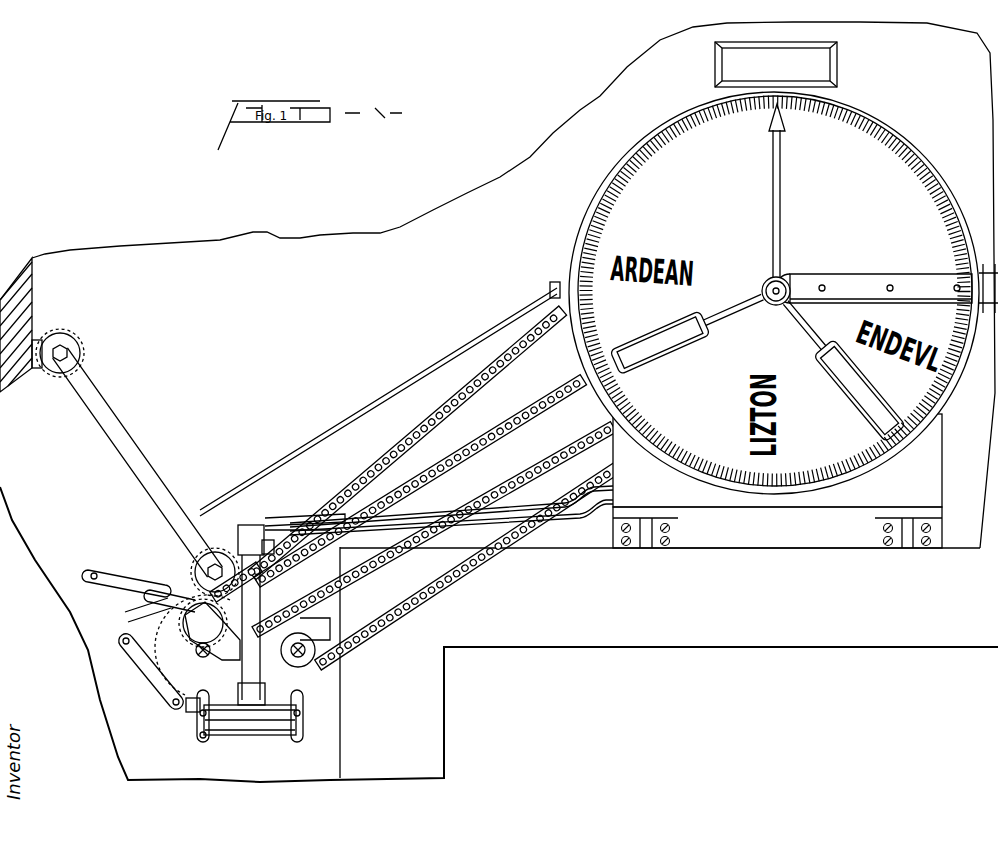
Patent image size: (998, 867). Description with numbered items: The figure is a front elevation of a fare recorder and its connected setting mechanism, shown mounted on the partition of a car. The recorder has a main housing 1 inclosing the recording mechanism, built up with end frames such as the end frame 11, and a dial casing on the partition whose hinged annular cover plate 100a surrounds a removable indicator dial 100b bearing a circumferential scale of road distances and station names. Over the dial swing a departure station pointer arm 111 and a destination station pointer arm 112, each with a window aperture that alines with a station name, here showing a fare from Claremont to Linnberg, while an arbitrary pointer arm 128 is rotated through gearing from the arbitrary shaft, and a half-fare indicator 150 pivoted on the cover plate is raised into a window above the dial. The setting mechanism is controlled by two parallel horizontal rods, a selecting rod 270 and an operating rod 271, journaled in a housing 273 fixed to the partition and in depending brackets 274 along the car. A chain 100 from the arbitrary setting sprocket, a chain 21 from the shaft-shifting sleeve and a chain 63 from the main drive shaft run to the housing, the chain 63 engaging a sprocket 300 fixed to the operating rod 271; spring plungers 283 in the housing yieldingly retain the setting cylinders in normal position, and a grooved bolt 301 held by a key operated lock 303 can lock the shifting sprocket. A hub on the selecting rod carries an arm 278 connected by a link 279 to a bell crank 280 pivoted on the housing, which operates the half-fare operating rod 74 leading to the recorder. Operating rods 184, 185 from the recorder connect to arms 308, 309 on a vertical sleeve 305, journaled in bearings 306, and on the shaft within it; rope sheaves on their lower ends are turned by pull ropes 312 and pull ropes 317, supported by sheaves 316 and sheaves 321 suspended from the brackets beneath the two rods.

The main housing 1 is at (943, 482).
The end frame 11 is at (856, 503).
The chain 21 is at (428, 483).
The chain 63 is at (428, 549).
The half-fare operating rod 74 is at (328, 432).
The chain 100 is at (384, 470).
The hinged annular cover plate 100a is at (898, 141).
The indicator dial 100b is at (918, 164).
The departure station pointer arm 111 is at (815, 347).
The destination station pointer arm 112 is at (714, 325).
The arbitrary pointer arm 128 is at (781, 199).
The half-fare indicator 150 is at (843, 62).
The operating rod 184 is at (566, 500).
The operating rod 185 is at (545, 510).
The selecting rod 270 is at (196, 646).
The operating rod 271 is at (318, 638).
The housing 273 is at (193, 604).
The depending bracket 274 is at (167, 498).
The arm 278 is at (188, 704).
The link 279 is at (146, 676).
The bell crank 280 is at (120, 595).
The spring plunger 283 is at (168, 588).
The sprocket 300 is at (342, 634).
The grooved bolt 301 is at (136, 626).
The key operated lock 303 is at (152, 656).
The vertical sleeve 305 is at (266, 603).
The bearing 306 is at (238, 542).
The arm 308 is at (244, 528).
The arm 309 is at (268, 525).
The pull rope 312 is at (303, 722).
The sheave 316 is at (301, 730).
The pull rope 317 is at (202, 712).
The sheave 321 is at (199, 736).